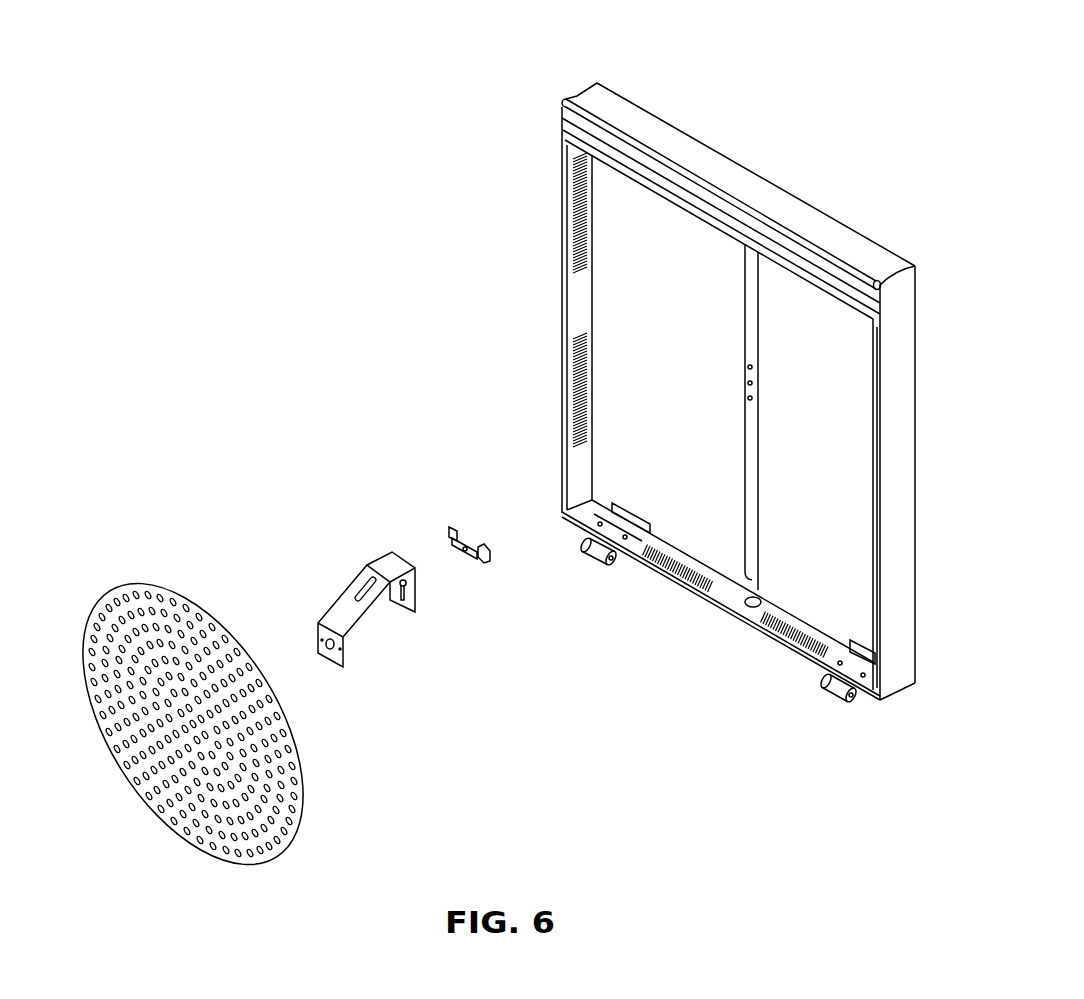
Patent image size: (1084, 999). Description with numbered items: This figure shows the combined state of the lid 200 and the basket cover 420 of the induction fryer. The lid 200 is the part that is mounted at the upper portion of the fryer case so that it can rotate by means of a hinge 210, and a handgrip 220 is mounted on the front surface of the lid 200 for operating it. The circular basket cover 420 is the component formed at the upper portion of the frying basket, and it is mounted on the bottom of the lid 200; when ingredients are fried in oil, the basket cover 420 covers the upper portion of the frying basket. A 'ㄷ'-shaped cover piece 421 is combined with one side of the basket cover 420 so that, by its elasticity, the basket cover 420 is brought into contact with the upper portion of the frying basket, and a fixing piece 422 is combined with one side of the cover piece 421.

The lid 200 is at (657, 127).
The hinge 210 is at (833, 688).
The handgrip 220 is at (571, 102).
The basket cover 420 is at (303, 761).
The cover piece 421 is at (382, 563).
The fixing piece 422 is at (462, 534).